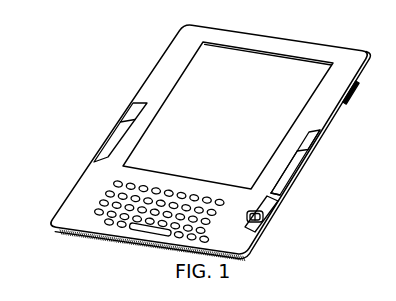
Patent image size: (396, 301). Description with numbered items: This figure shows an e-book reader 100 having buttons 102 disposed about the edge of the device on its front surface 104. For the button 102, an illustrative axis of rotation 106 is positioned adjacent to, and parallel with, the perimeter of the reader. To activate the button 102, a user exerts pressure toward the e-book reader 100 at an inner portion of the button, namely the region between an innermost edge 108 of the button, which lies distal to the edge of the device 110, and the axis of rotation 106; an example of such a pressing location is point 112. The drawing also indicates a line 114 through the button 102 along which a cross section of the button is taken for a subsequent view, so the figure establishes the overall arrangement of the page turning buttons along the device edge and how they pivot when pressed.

The e-book reader 100 is at (54, 33).
The button 102 is at (290, 172).
The front surface 104 is at (163, 84).
The axis of rotation 106 is at (287, 176).
The innermost edge 108 is at (300, 152).
The edge of the device 110 is at (298, 161).
The point 112 is at (280, 187).
The line 114 is at (293, 162).